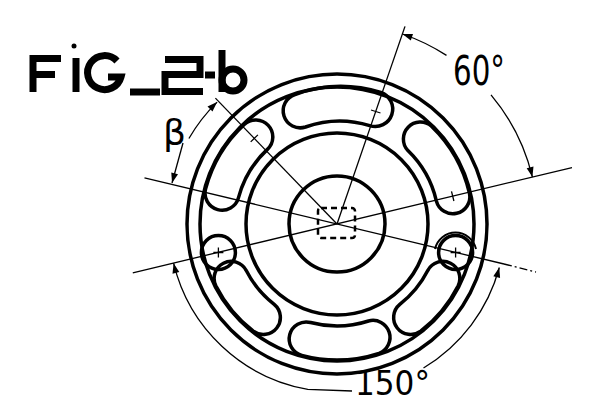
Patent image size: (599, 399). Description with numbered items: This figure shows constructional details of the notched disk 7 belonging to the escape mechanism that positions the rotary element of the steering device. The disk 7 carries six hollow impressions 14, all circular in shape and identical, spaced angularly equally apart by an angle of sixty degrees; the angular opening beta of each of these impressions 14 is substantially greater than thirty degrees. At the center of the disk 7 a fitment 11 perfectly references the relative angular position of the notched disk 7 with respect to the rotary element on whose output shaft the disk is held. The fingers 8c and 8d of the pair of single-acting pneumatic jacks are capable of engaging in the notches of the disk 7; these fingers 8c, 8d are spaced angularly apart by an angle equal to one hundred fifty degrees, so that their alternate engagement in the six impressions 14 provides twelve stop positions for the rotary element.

The notched disk 7 is at (466, 216).
The hollow impressions 14 is at (428, 147).
The fitment 11 is at (354, 207).
The finger 8c is at (480, 257).
The finger 8d is at (213, 245).